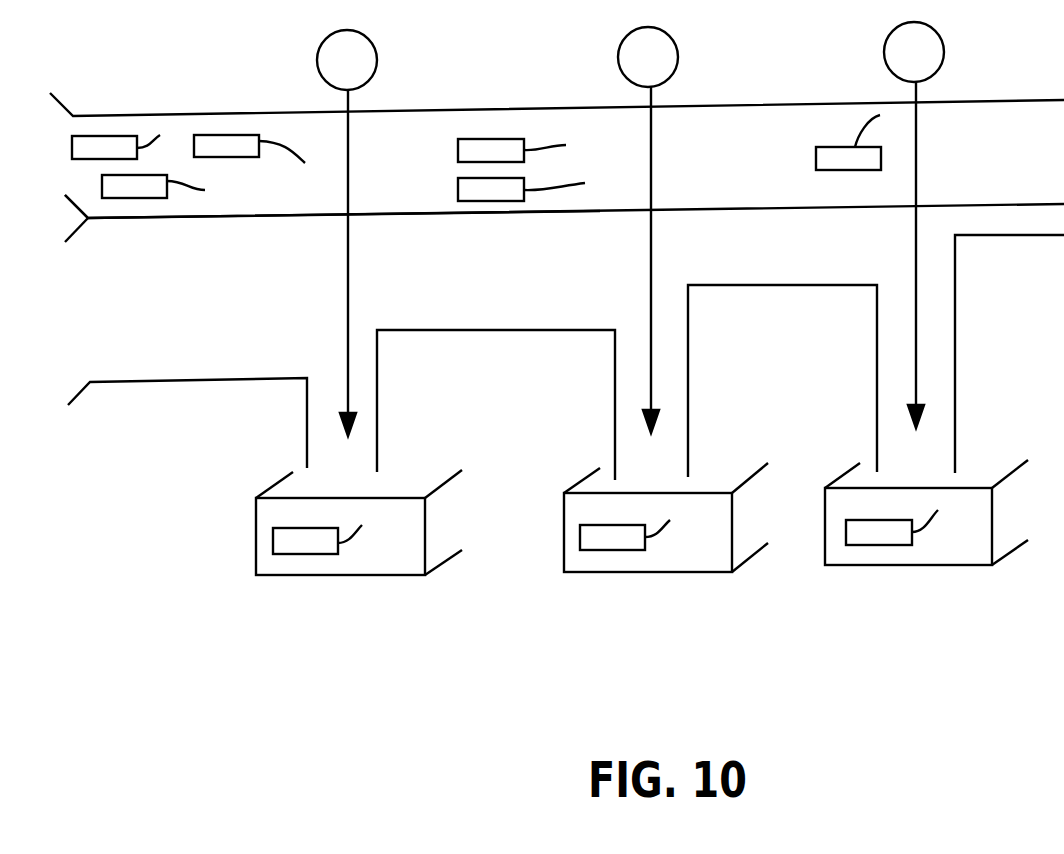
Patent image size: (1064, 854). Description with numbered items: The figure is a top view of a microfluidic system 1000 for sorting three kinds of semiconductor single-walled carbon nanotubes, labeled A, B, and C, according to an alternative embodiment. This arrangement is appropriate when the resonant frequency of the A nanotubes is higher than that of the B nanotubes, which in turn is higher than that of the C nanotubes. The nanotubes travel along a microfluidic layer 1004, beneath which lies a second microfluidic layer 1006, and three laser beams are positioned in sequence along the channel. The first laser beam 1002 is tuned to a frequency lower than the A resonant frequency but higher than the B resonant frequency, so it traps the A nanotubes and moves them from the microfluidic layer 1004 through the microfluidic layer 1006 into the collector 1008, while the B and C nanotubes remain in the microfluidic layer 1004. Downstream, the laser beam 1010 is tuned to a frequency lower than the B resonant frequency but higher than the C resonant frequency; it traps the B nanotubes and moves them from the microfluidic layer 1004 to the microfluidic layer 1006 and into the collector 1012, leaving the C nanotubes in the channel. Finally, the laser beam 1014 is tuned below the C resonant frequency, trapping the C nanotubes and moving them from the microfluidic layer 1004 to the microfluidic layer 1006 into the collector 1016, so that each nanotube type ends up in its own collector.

The microfluidic system 1000 is at (808, 702).
The laser beam 1002 is at (377, 57).
The microfluidic layer 1004 is at (405, 173).
The microfluidic layer 1006 is at (183, 271).
The collector 1008 is at (377, 575).
The laser beam 1010 is at (678, 52).
The collector 1012 is at (687, 572).
The laser beam 1014 is at (944, 50).
The collector 1016 is at (945, 565).